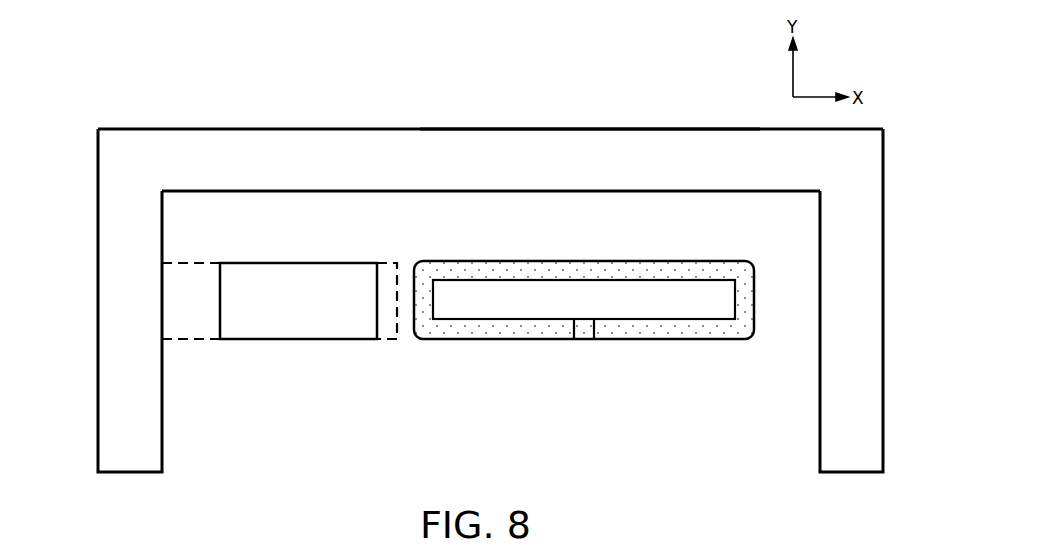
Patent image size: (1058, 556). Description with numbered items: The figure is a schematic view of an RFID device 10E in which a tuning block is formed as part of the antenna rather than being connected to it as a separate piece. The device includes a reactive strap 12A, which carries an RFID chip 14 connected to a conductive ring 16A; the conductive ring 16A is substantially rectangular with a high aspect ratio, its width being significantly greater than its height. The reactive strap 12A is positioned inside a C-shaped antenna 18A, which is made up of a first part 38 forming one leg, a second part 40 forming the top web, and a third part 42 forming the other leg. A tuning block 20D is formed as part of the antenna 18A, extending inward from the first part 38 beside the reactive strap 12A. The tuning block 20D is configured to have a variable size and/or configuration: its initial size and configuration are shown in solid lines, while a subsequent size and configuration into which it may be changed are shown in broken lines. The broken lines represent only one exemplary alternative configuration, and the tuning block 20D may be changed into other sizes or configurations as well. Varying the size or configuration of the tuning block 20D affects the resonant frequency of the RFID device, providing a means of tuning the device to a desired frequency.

The tape measure assembly 10E is at (162, 118).
The reactive strap 12A is at (709, 347).
The RFID chip 14 is at (585, 341).
The conductive ring 16A is at (755, 266).
The antenna 18A is at (614, 153).
The tuning block 20D is at (296, 340).
The first part 38 is at (111, 360).
The second part 40 is at (344, 138).
The third part 42 is at (870, 360).